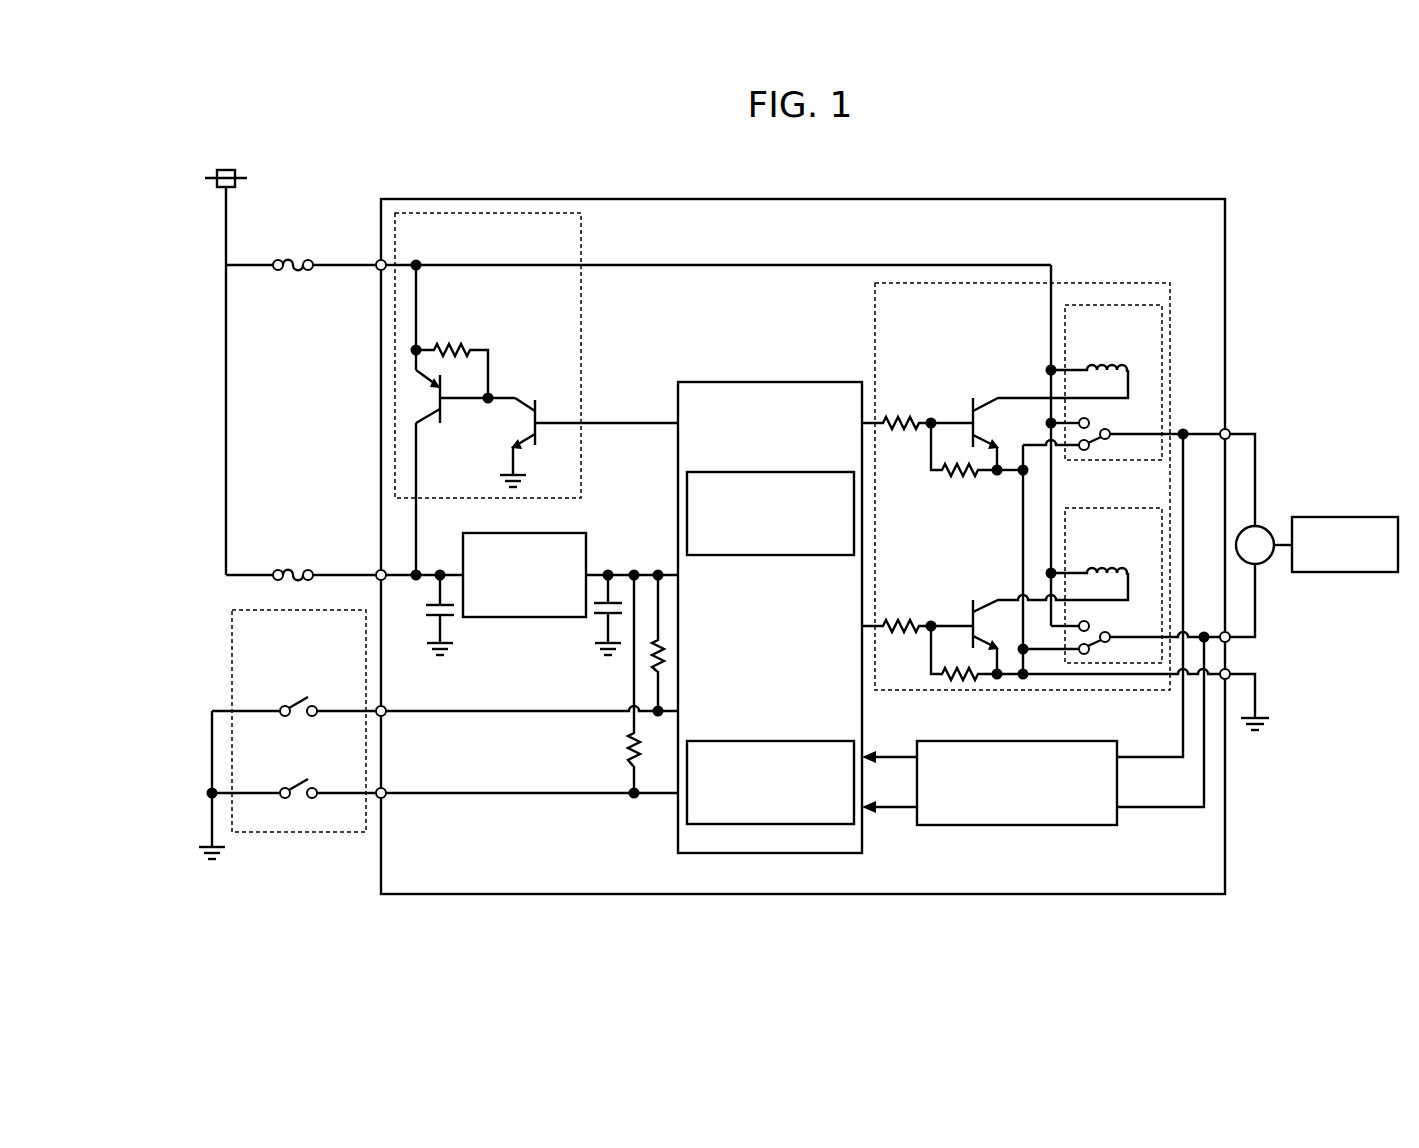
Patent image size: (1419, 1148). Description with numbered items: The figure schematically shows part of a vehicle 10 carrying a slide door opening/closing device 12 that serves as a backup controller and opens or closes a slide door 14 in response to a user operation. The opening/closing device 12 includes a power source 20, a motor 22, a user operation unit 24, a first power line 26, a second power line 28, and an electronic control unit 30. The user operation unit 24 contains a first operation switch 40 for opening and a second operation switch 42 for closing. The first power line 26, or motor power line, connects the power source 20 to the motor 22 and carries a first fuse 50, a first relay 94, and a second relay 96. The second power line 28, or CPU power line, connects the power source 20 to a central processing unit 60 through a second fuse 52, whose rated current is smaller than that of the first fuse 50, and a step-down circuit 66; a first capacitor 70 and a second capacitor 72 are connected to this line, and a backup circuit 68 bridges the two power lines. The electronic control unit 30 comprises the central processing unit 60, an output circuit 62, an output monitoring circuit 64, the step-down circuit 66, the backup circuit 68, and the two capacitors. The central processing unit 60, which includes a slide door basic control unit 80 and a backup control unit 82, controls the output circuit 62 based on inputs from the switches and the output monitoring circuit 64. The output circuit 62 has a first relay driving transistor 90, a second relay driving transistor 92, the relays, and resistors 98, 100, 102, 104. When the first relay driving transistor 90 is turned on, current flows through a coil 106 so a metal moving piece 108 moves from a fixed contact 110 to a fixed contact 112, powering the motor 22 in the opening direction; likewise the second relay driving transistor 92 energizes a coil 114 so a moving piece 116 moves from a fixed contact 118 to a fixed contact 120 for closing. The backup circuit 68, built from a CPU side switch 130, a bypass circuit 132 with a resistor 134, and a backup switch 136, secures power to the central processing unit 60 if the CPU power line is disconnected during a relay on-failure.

The vehicle 10 is at (1187, 176).
The slide door opening/closing device 12 is at (707, 184).
The slide door 14 is at (1333, 517).
The power source 20 is at (238, 176).
The motor 22 is at (1263, 526).
The user operation unit 24 is at (263, 608).
The first power line 26 is at (340, 261).
The second power line 28 is at (342, 571).
The electronic control unit 30 is at (803, 199).
The first operation switch 40 is at (303, 720).
The second operation switch 42 is at (303, 802).
The first fuse 50 is at (289, 257).
The second fuse 52 is at (289, 567).
The central processing unit 60 is at (769, 382).
The output circuit 62 is at (875, 292).
The output monitoring circuit 64 is at (1013, 826).
The step-down circuit 66 is at (520, 618).
The backup circuit 68 is at (582, 222).
The first capacitor 70 is at (432, 648).
The second capacitor 72 is at (604, 630).
The slide door basic control unit 80 is at (720, 471).
The backup control unit 82 is at (720, 741).
The first relay driving transistor 90 is at (972, 405).
The second relay driving transistor 92 is at (971, 607).
The first relay 94 is at (1064, 316).
The second relay 96 is at (1064, 523).
The resistor 98 is at (900, 415).
The resistor 100 is at (946, 482).
The resistor 102 is at (900, 618).
The resistor 104 is at (945, 681).
The coil 106 is at (1087, 366).
The moving piece 108 is at (1108, 442).
The fixed contact 110 is at (1083, 452).
The fixed contact 112 is at (1091, 423).
The coil 114 is at (1085, 569).
The moving piece 116 is at (1107, 645).
The fixed contact 118 is at (1083, 656).
The fixed contact 120 is at (1091, 624).
The CPU side switch 130 is at (540, 399).
The bypass circuit 132 is at (490, 362).
The resistor 134 is at (454, 344).
The backup switch 136 is at (443, 428).